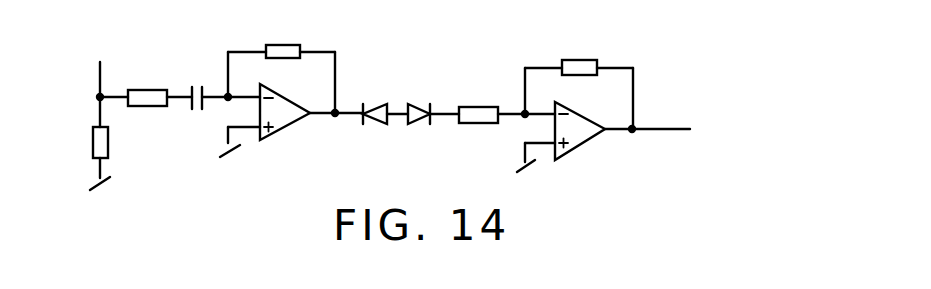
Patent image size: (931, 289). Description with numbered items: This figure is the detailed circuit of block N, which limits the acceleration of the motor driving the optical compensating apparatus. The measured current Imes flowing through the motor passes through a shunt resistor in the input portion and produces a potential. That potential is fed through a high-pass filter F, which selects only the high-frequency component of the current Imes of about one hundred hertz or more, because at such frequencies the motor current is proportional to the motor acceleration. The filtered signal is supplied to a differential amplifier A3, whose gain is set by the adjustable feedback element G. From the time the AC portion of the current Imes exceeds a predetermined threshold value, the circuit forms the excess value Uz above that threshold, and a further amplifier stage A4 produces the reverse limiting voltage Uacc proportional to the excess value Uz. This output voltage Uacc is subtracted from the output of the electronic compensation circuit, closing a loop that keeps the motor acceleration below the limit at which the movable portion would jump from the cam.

The measured current Imes is at (100, 35).
The high-pass filter F is at (217, 80).
The adjustable feedback (gain) resistor G is at (270, 70).
The differential amplifier A3 is at (285, 116).
The excess value Uz is at (445, 130).
The operational amplifier A4 is at (580, 135).
The limiting voltage Uacc is at (677, 131).